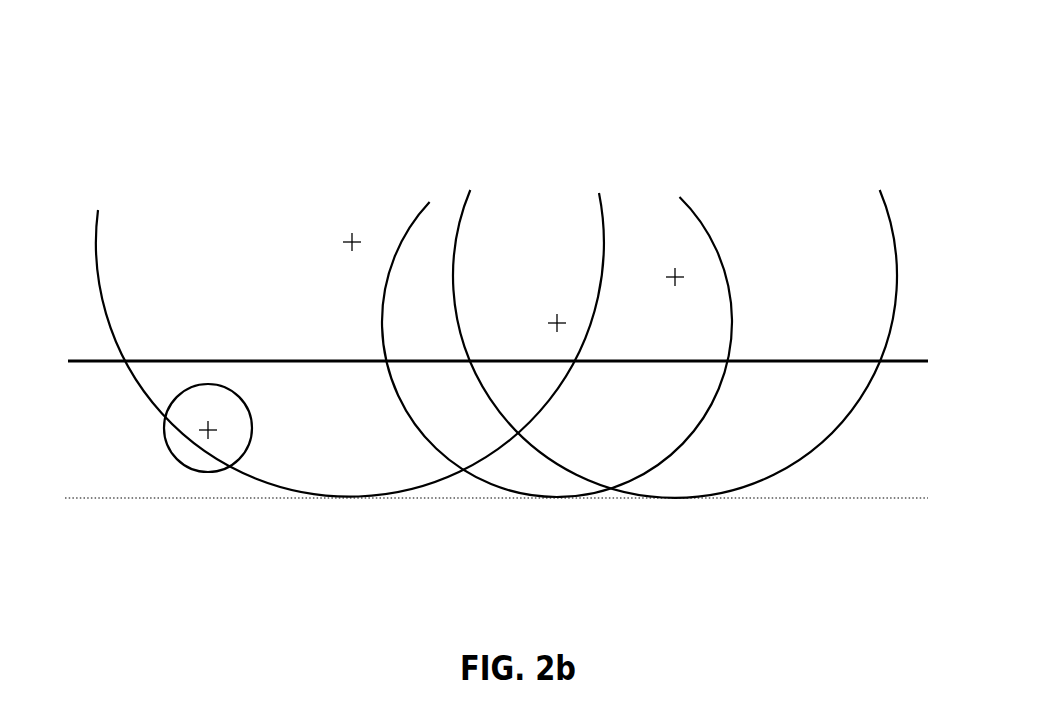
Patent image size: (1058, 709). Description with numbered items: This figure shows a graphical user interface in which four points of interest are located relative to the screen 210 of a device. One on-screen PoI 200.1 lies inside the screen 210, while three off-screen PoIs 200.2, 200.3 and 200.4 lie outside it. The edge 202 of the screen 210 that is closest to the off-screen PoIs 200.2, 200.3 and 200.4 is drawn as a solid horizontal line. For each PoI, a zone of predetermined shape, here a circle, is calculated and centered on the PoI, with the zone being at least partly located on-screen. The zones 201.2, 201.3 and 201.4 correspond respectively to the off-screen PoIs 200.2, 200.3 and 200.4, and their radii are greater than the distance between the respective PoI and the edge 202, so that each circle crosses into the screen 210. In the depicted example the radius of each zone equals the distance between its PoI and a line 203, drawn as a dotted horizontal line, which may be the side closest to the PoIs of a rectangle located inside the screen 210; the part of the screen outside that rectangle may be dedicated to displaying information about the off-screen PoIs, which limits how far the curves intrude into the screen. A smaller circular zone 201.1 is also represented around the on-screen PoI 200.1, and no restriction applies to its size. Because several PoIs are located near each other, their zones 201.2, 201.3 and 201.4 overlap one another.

The on-screen PoI 200.1 is at (213, 434).
The off-screen PoI 200.2 is at (360, 238).
The off-screen PoI 200.3 is at (563, 323).
The off-screen PoI 200.4 is at (674, 270).
The circular zone 201.1 is at (172, 463).
The zone 201.2 is at (487, 462).
The zone 201.3 is at (687, 440).
The zone 201.4 is at (835, 437).
The edge of the screen 202 is at (328, 364).
The line 203 is at (803, 498).
The screen 210 is at (298, 445).